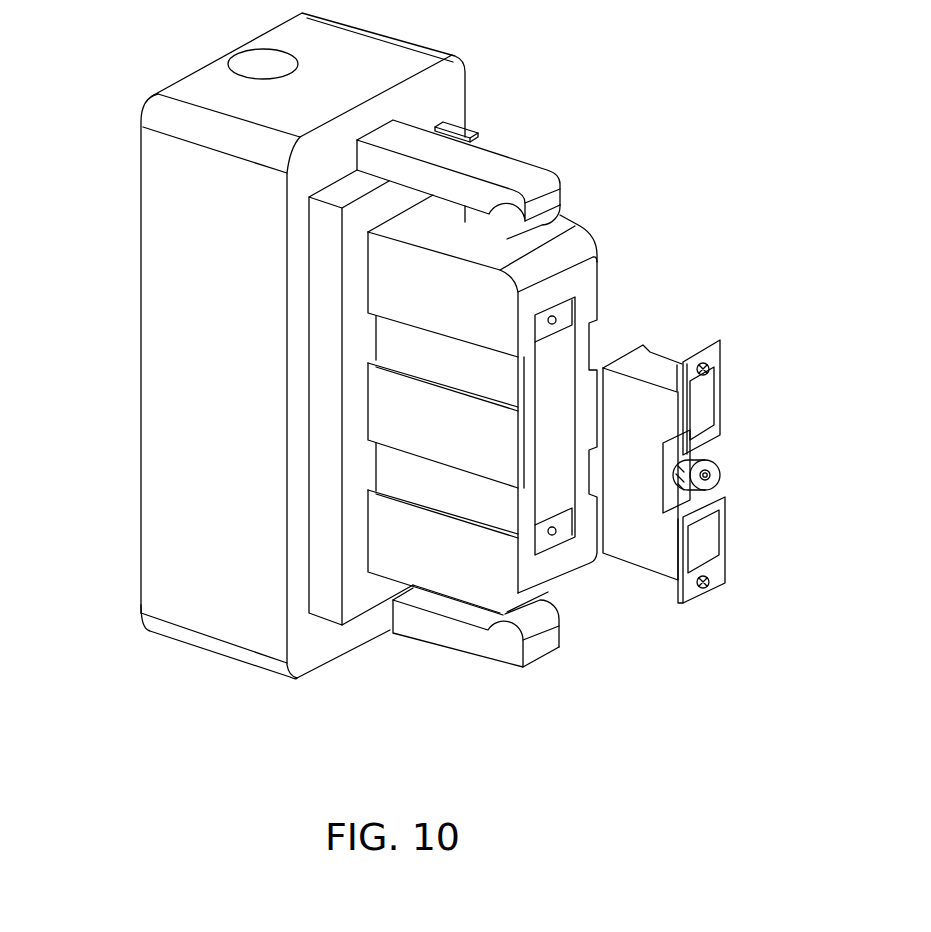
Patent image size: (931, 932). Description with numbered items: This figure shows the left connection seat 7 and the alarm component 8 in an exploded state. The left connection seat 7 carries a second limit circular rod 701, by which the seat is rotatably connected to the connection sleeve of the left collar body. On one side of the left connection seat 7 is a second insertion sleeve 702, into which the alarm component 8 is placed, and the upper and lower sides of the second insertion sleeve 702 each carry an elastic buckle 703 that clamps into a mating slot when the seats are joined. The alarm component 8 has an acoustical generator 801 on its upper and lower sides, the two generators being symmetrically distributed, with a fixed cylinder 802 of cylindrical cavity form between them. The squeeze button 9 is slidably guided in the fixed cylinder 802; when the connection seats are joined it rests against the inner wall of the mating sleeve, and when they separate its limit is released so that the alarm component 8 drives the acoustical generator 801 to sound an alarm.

The left connection seat 7 is at (192, 407).
The second limit circular rod 701 is at (263, 63).
The second insertion sleeve 702 is at (563, 260).
The elastic buckle 703 is at (484, 180).
The alarm component 8 is at (630, 542).
The acoustical generator 801 is at (706, 407).
The fixed cylinder 802 is at (702, 460).
The squeeze button 9 is at (712, 482).